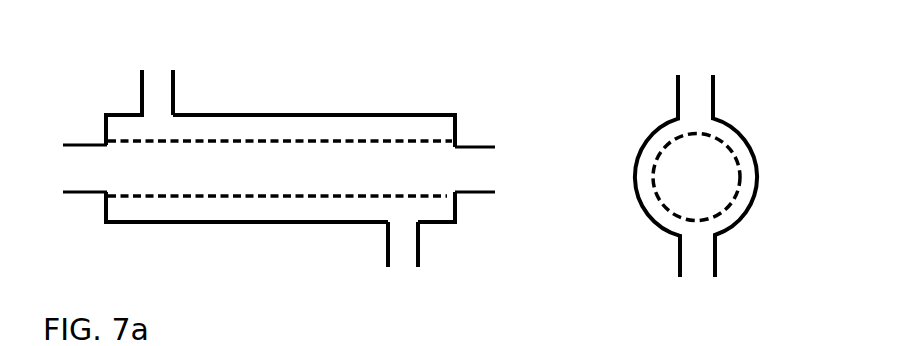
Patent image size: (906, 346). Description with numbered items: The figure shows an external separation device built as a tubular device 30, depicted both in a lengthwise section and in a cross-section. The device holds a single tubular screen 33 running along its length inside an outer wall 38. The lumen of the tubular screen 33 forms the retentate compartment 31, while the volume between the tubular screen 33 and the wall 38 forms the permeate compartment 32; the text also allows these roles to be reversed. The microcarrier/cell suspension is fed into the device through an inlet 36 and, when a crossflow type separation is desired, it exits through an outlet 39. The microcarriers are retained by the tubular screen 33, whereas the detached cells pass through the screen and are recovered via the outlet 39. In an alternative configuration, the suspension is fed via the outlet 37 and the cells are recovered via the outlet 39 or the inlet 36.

The tubular device 30 is at (611, 86).
The retentate compartment 31 is at (188, 168).
The permeate compartment 32 is at (258, 212).
The tubular screen 33 is at (280, 142).
The inlet 36 is at (72, 168).
The outlet 37 is at (402, 267).
The wall 38 is at (378, 115).
The outlet 39 is at (490, 170).